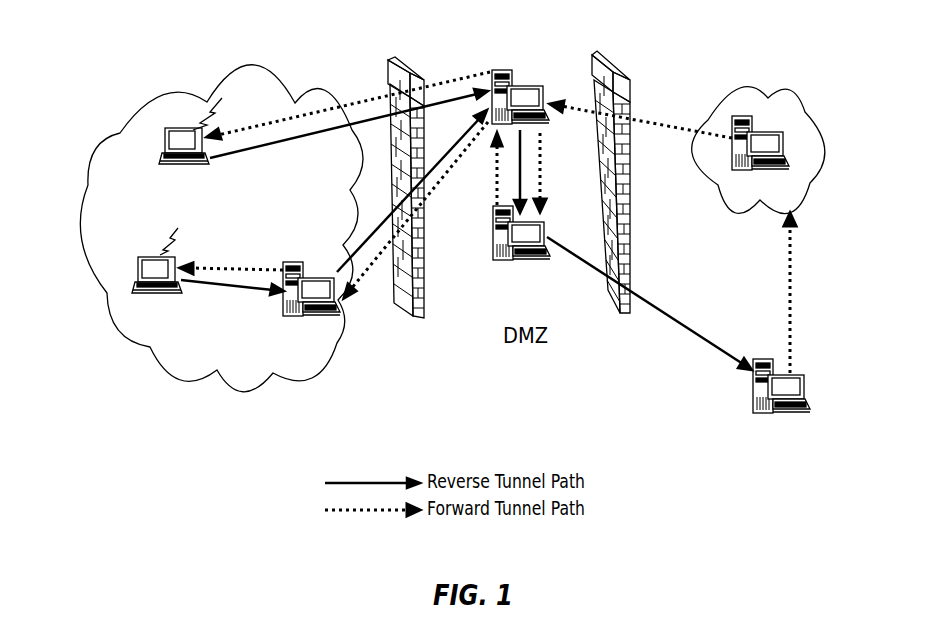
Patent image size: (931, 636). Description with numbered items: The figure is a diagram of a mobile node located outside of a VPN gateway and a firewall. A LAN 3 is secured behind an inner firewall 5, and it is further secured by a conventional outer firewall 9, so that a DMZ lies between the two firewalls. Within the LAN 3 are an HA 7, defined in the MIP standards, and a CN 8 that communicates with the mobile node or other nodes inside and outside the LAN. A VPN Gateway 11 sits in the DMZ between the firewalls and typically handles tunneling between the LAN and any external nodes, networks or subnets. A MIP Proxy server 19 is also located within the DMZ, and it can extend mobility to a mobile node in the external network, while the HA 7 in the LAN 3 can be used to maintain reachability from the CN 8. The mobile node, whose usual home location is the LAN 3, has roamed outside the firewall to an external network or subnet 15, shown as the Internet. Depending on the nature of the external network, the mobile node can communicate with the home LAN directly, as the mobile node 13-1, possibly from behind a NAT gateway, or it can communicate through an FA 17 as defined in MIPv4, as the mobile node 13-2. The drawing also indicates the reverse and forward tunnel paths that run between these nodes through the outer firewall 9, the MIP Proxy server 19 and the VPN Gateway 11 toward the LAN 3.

The LAN 3 is at (826, 156).
The inner firewall 5 is at (620, 66).
The HA (Home Agent) 7 is at (773, 127).
The CN (Correspondent Node) 8 is at (805, 378).
The outer firewall 9 is at (400, 62).
The VPN Gateway 11 is at (493, 242).
The mobile node communicating directly 13-1 is at (165, 135).
The mobile node communicating through a foreign agent 13-2 is at (140, 289).
The external network or subnet 15 is at (90, 187).
The FA (Foreign Agent) 17 is at (283, 306).
The MIP Proxy server 19 is at (545, 94).